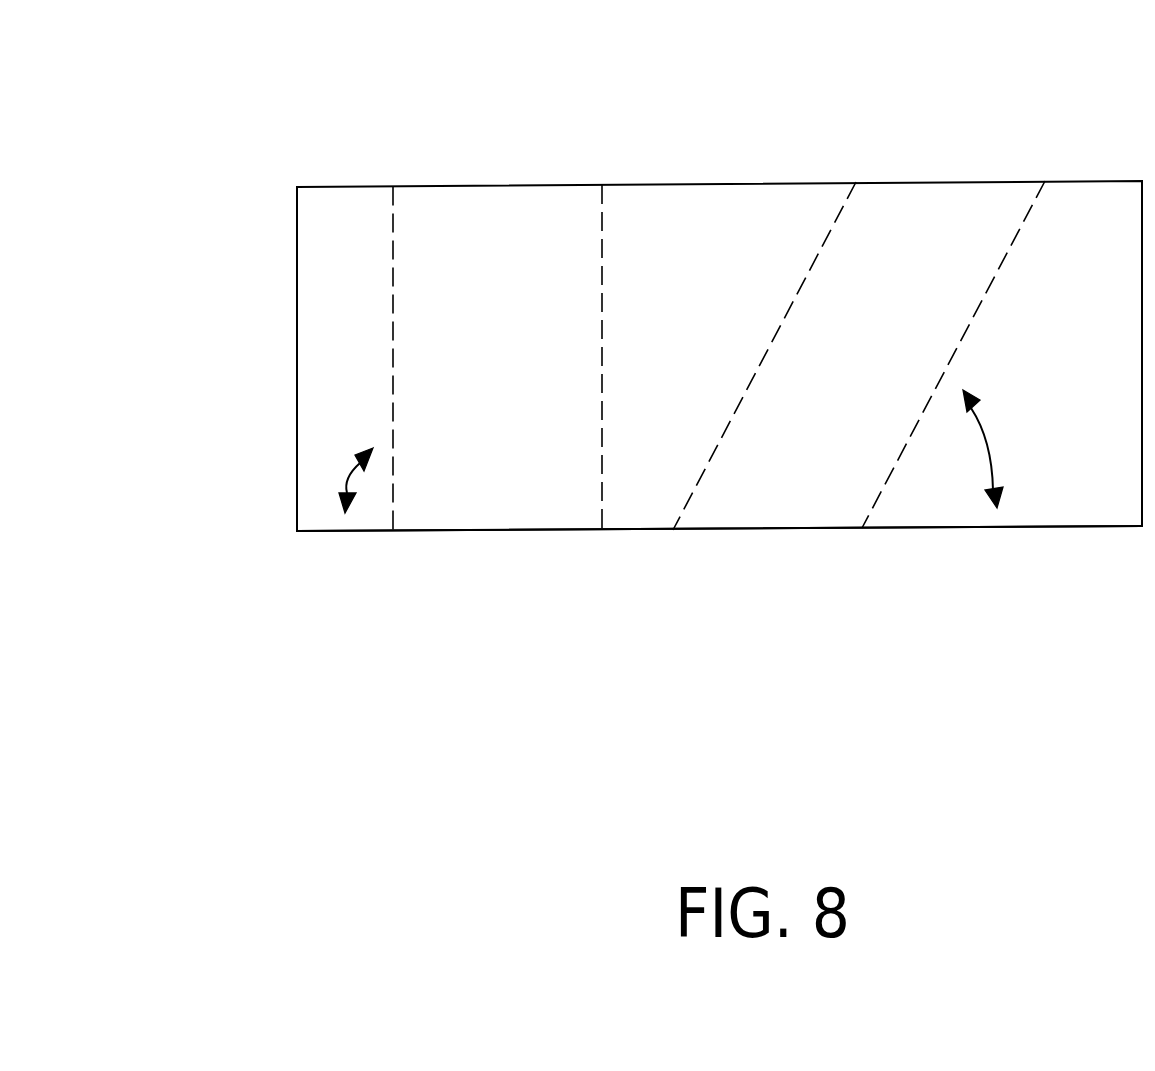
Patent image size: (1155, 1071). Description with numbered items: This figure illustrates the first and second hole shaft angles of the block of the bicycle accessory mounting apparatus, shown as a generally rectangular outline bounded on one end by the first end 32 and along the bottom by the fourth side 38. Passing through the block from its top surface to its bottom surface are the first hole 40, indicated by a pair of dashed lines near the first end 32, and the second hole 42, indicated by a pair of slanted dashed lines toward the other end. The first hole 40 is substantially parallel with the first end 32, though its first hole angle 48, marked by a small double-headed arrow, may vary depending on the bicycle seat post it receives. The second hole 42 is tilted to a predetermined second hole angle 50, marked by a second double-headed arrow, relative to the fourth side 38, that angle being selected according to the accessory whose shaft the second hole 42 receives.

The first end 32 is at (292, 308).
The fourth side 38 is at (930, 543).
The first hole 40 is at (513, 253).
The second hole 42 is at (908, 217).
The first hole angle 48 is at (377, 528).
The second hole angle 50 is at (1021, 443).